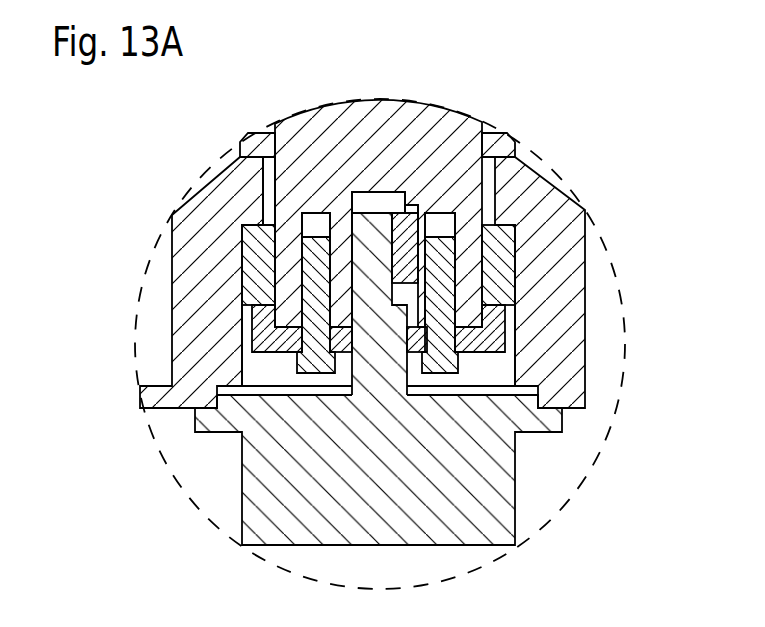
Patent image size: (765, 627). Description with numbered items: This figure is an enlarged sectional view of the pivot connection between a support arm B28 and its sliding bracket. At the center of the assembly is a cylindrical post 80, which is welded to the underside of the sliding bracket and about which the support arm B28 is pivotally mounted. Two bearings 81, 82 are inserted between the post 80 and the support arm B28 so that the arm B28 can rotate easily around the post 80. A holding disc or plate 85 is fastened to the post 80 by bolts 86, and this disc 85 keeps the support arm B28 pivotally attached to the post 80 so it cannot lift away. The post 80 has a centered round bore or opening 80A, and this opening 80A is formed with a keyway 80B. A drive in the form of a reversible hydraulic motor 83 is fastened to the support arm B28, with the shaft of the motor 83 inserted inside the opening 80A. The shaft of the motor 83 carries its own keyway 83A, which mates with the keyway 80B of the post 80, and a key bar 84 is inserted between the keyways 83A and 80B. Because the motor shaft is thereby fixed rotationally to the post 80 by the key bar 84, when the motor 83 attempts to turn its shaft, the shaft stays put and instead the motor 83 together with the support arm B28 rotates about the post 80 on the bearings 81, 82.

The cylindrical post 80 is at (407, 117).
The centered round bore or opening 80A is at (368, 190).
The keyway 80B is at (412, 203).
The bearing 81 is at (493, 143).
The bearing 82 is at (513, 230).
The reversible hydraulic motor 83 is at (493, 527).
The keyway 83A is at (400, 290).
The key bar 84 is at (397, 218).
The holding disc or plate 85 is at (492, 342).
The bolts 86 is at (323, 363).
The support arm B28 is at (558, 346).